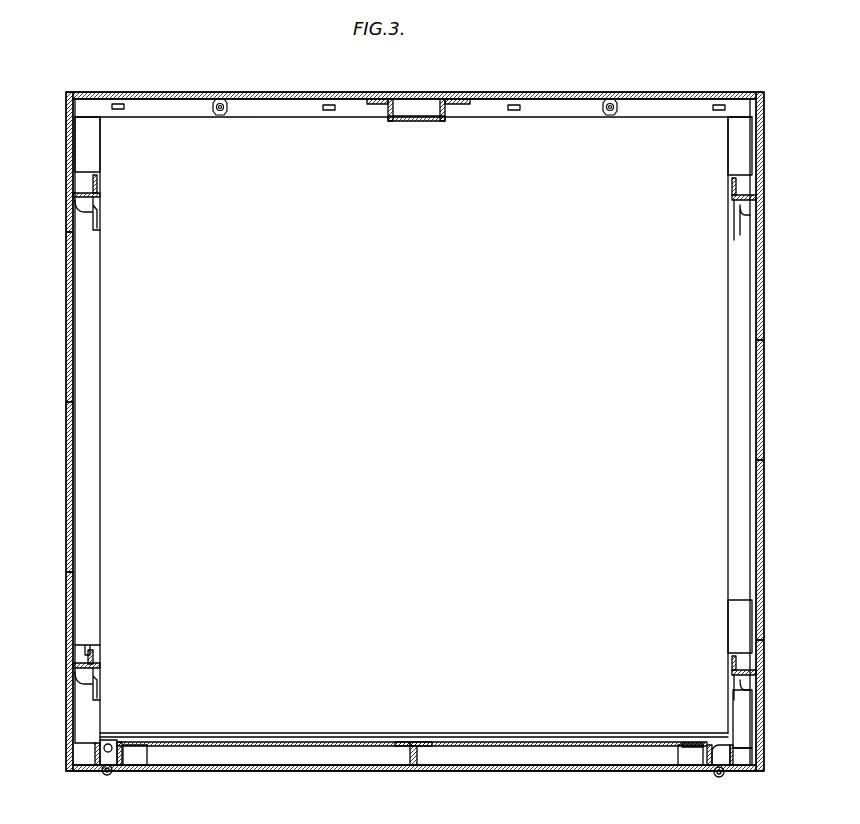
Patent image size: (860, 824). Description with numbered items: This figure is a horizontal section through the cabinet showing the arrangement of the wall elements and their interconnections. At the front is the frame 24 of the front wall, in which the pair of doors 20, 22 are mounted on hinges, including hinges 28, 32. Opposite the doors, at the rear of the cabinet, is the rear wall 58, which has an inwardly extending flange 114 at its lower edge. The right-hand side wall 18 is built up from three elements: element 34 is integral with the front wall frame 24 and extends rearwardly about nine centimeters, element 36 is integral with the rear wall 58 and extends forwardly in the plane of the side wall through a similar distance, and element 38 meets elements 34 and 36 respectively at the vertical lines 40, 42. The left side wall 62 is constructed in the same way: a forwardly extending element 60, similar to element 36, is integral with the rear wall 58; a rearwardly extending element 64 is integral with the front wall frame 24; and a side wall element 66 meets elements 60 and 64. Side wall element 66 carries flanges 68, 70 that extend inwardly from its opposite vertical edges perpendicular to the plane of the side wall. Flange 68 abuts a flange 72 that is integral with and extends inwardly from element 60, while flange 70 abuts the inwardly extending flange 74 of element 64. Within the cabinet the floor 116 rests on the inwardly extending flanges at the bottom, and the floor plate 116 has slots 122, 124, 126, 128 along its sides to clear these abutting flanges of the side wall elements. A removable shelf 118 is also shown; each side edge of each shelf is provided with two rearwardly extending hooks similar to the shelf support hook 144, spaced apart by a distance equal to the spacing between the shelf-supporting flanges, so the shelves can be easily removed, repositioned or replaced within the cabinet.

The side wall 18 is at (763, 395).
The door 20 is at (307, 771).
The door 22 is at (600, 771).
The frame 24 is at (95, 772).
The hinge 28 is at (718, 778).
The hinge 32 is at (112, 771).
The side wall element 34 is at (758, 736).
The side wall element 36 is at (760, 148).
The side wall element 38 is at (763, 505).
The vertical line 40 is at (757, 678).
The vertical line 42 is at (760, 200).
The rear wall 58 is at (282, 92).
The forwardly extending element 60 is at (68, 143).
The left side wall 62 is at (68, 447).
The rearwardly extending element 64 is at (67, 740).
The side wall element 66 is at (68, 352).
The flange 68 is at (80, 215).
The flange 70 is at (78, 664).
The flange 72 is at (77, 183).
The flange 74 is at (78, 688).
The flange 114 is at (560, 100).
The floor 116 is at (72, 560).
The shelf 118 is at (167, 140).
The slot 122 is at (98, 650).
The slot 124 is at (95, 212).
The slot 126 is at (740, 235).
The slot 128 is at (740, 693).
The shelf support hook 144 is at (100, 695).